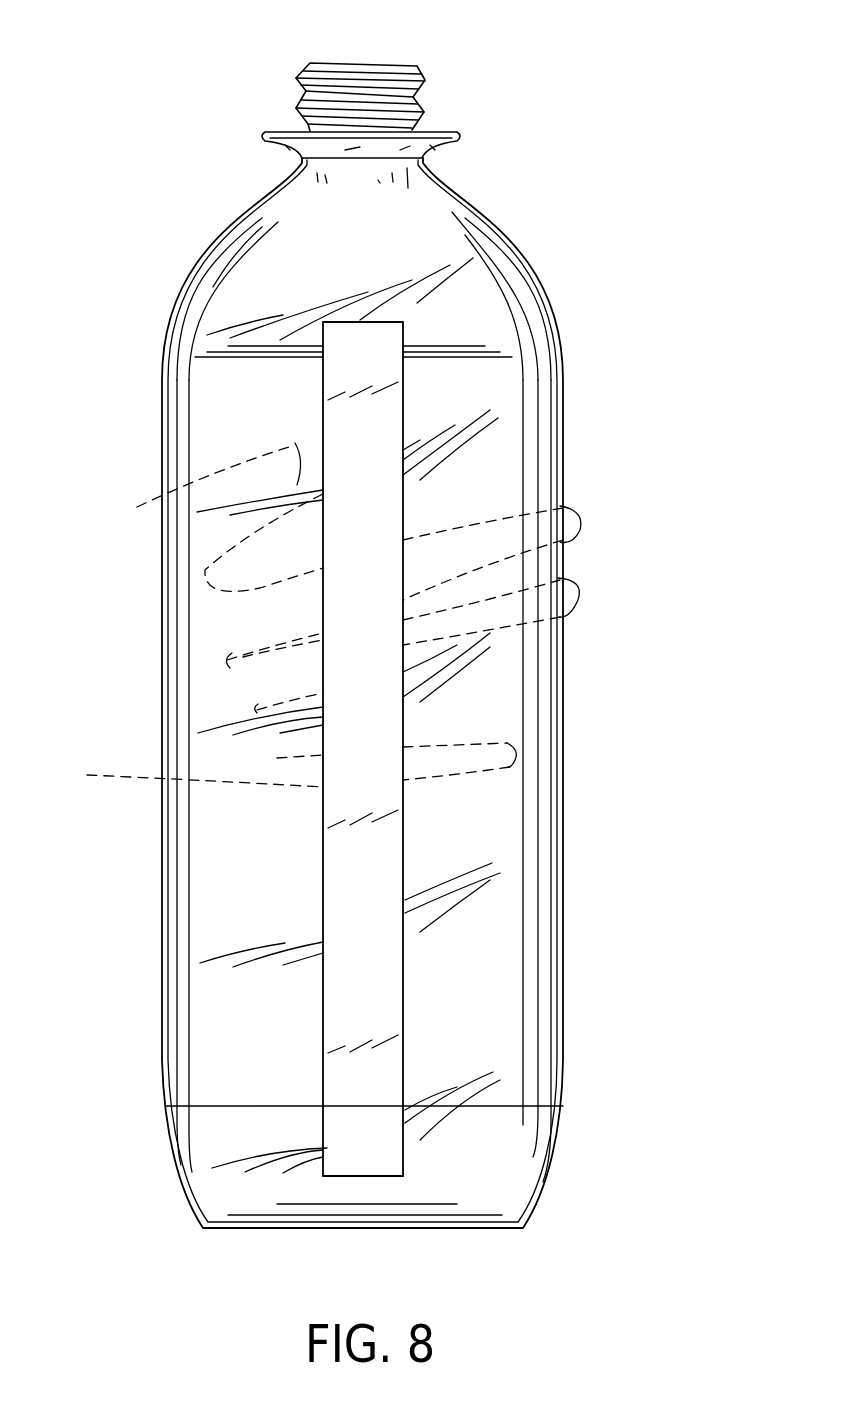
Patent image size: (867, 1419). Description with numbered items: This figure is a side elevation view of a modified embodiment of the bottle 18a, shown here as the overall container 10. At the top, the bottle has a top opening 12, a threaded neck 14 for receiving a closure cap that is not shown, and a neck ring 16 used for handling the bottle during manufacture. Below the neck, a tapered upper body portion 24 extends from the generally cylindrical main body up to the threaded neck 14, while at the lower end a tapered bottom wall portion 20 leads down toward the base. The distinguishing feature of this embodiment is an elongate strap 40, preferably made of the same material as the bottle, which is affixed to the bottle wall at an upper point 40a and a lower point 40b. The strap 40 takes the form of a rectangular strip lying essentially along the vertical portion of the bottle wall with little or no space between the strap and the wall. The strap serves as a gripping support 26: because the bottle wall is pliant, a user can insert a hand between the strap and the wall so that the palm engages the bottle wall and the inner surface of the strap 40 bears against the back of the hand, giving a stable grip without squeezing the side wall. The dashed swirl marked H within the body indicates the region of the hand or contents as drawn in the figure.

The bottle container 10 is at (664, 321).
The top opening 12 is at (407, 63).
The threaded neck 14 is at (422, 100).
The neck ring 16 is at (457, 133).
The bottle 18a is at (614, 660).
The tapered bottom wall portion 20 is at (556, 1153).
The tapered upper body portion 24 is at (540, 258).
The gripping support 26 is at (386, 773).
The elongate strap 40 is at (323, 613).
The upper point 40a is at (333, 363).
The lower point 40b is at (347, 1147).
The heated region H is at (588, 570).